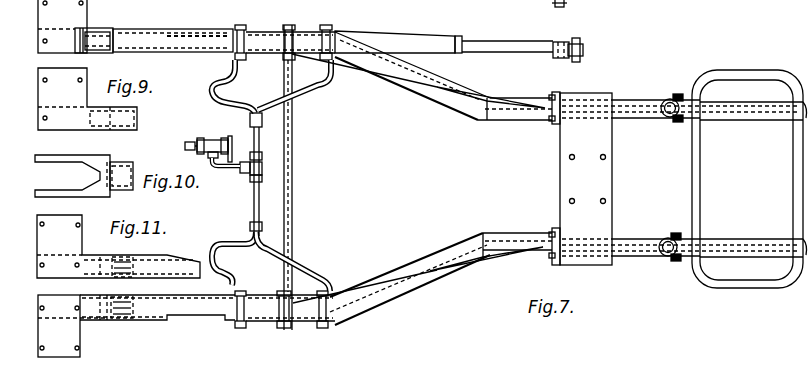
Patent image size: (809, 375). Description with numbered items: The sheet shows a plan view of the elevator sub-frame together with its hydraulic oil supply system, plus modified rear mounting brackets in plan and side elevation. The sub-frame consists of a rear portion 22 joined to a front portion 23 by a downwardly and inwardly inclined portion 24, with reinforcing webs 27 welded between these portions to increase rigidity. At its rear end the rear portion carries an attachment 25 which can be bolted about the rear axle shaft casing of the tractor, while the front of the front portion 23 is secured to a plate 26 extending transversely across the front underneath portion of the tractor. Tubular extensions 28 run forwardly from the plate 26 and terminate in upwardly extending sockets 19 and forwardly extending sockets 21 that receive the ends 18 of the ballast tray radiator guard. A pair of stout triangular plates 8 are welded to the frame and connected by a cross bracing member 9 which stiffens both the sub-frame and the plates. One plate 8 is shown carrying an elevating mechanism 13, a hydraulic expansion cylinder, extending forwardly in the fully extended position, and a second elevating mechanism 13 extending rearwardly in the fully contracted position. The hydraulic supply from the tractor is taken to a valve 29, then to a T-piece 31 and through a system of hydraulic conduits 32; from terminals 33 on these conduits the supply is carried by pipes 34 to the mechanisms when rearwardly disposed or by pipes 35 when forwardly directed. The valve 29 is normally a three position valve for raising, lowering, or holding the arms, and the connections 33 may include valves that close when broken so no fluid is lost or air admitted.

In FIG. 7, the triangular shaped plates 8 is at (300, 32).
In FIG. 7, the cross bracing member 9 is at (291, 190).
In FIG. 7, the elevating mechanism 13 is at (145, 38).
In FIG. 7, the ends of the ballast tray radiator guard 18 is at (626, 7).
In FIG. 7, the upwardly extending sockets 19 is at (665, 118).
In FIG. 7, the forwardly extending sockets 21 is at (683, 103).
In FIG. 7, the rear portion 22 is at (198, 305).
In FIG. 7, the front portion 23 is at (527, 252).
In FIG. 7, the downwardly and inwardly inclined portion 24 is at (413, 268).
In FIG. 7, the attachment 25 is at (73, 333).
In FIG. 11, the attachment 25 is at (66, 226).
In FIG. 7, the plate 26 is at (583, 262).
In FIG. 7, the reinforcing webs 27 is at (353, 68).
In FIG. 7, the tubular extensions 28 is at (627, 119).
In FIG. 7, the valve 29 is at (211, 140).
In FIG. 7, the T-piece 31 is at (259, 169).
In FIG. 7, the hydraulic conduits 32 is at (254, 207).
In FIG. 7, the terminals 33 is at (250, 120).
In FIG. 7, the pipes 34 is at (211, 90).
In FIG. 7, the pipes 35 is at (314, 84).